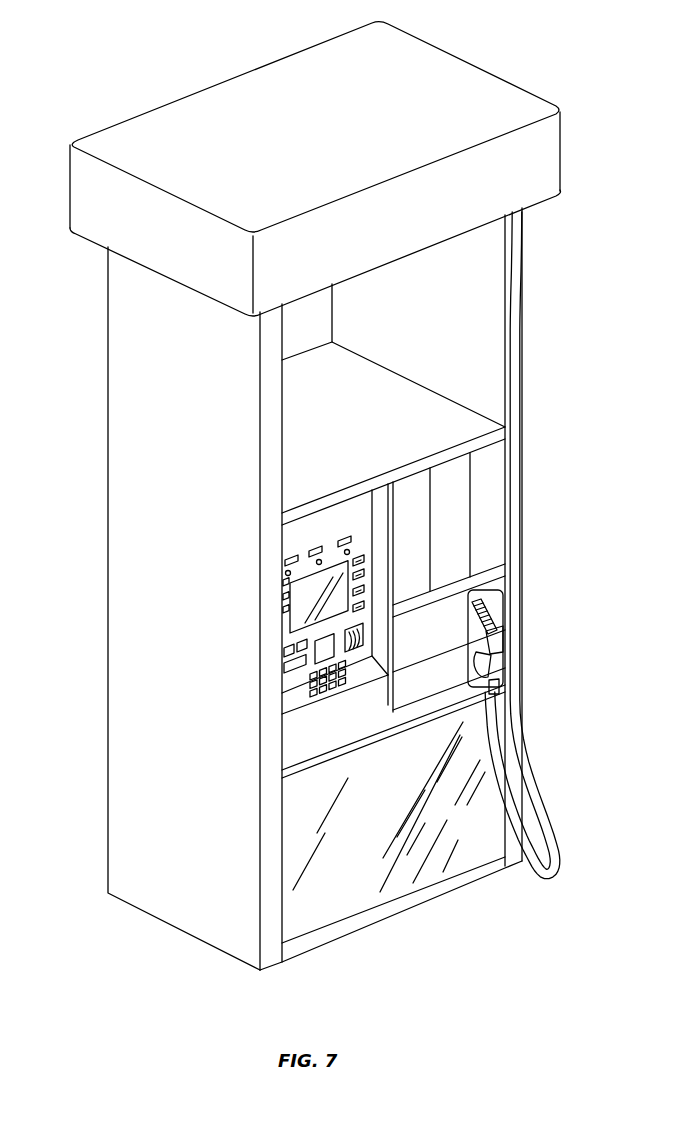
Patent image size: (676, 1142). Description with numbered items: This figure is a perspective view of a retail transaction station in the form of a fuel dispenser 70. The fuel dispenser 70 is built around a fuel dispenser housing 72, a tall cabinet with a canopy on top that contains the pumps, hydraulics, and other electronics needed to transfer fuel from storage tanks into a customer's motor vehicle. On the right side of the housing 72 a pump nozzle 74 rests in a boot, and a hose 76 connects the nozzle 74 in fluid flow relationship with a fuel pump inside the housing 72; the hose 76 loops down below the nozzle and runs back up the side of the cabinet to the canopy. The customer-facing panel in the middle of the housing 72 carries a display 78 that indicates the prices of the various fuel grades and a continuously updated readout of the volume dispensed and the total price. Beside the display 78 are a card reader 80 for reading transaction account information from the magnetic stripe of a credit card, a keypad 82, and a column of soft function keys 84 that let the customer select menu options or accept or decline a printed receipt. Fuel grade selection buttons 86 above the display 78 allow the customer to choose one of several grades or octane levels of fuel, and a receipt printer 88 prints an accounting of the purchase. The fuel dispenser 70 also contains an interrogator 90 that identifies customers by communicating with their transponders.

The fuel dispenser 70 is at (113, 72).
The fuel dispenser housing 72 is at (108, 730).
The pump nozzle 74 is at (492, 628).
The hose 76 is at (537, 820).
The display 78 is at (308, 586).
The card reader 80 is at (287, 583).
The keypad 82 is at (308, 672).
The soft function keys 84 is at (362, 605).
The fuel grade selection buttons 86 is at (338, 540).
The receipt printer 88 is at (312, 643).
The interrogator 90 is at (290, 607).